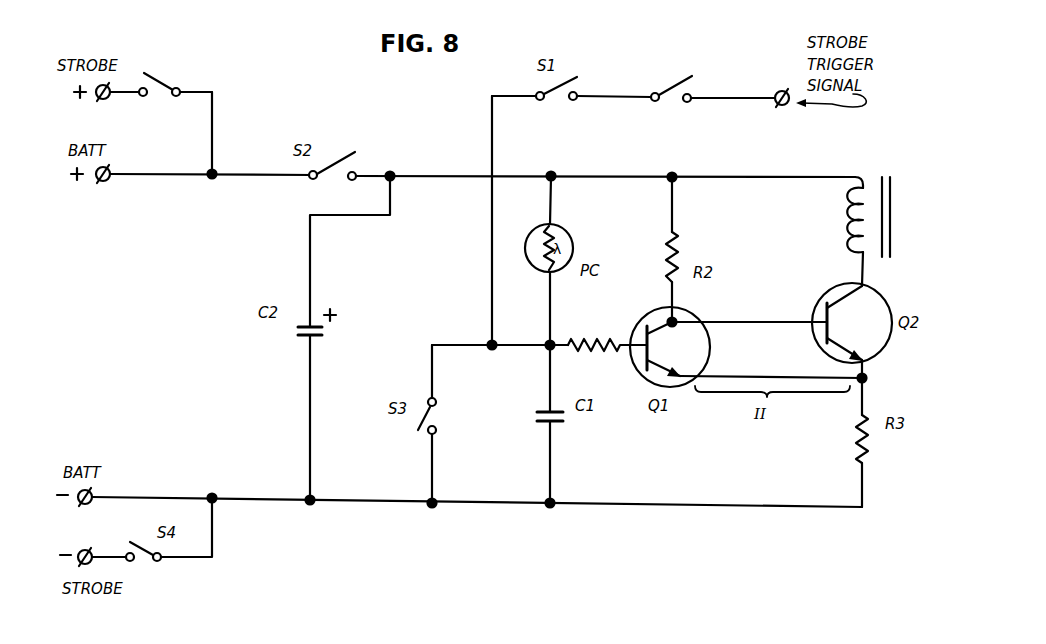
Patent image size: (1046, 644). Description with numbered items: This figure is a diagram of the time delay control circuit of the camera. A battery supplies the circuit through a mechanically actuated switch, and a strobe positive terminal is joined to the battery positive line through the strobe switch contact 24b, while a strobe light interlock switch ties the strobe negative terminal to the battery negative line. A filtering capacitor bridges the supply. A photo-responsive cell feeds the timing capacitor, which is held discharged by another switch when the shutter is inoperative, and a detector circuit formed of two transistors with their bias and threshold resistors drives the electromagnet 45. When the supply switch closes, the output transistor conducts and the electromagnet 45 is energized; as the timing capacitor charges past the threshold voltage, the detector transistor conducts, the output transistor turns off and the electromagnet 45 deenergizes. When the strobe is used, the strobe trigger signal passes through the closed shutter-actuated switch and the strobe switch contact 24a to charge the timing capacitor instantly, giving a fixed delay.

The strobe switch contact 24b is at (209, 64).
The strobe switch contact 24a is at (711, 57).
The electromagnet 45 is at (846, 213).